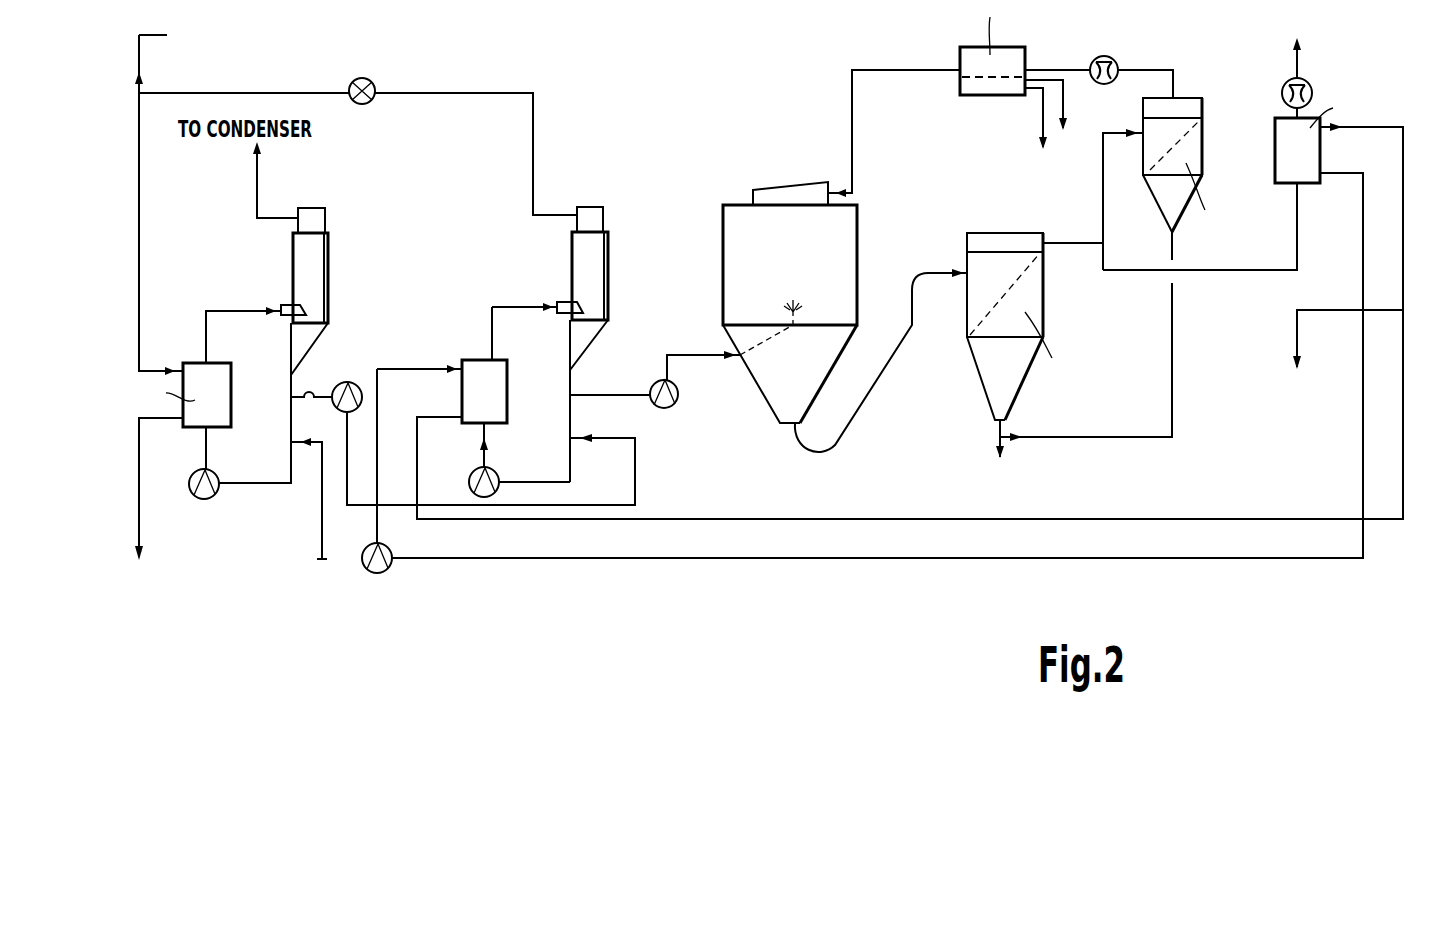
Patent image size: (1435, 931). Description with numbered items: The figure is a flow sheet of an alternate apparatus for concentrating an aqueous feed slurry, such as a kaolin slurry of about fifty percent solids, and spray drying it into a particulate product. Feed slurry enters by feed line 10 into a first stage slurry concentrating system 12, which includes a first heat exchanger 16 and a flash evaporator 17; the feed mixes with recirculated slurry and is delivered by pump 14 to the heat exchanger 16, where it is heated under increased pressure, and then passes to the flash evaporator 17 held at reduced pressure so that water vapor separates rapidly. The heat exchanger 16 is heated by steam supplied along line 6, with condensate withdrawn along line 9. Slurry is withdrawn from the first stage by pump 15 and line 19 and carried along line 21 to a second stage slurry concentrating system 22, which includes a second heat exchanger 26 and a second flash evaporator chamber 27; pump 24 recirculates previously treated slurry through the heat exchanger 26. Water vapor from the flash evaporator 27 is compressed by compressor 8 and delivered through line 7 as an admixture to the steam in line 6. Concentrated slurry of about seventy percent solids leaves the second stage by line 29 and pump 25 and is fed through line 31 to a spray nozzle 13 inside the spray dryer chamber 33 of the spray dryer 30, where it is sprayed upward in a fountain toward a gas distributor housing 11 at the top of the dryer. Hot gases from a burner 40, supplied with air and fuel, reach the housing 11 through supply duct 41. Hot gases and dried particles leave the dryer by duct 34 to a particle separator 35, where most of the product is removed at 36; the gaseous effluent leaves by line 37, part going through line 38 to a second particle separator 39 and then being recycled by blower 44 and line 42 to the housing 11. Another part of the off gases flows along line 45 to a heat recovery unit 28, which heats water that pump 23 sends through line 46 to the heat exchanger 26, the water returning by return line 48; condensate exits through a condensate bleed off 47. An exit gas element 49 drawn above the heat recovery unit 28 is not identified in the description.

The steam line 6 is at (139, 157).
The line 7 is at (483, 93).
The compressor 8 is at (363, 78).
The condensate line 9 is at (139, 512).
The feed line 10 is at (322, 533).
The gas distributor housing 11 is at (800, 188).
The first stage slurry concentrating system 12 is at (265, 343).
The spray nozzle 13 is at (802, 312).
The pump 14 is at (192, 491).
The pump 15 is at (340, 386).
The first heat exchanger 16 is at (231, 357).
The flash evaporator 17 is at (330, 236).
The line 19 is at (311, 411).
The line 21 is at (635, 468).
The second stage slurry concentrating system 22 is at (542, 338).
The pump 23 is at (392, 548).
The pump 24 is at (478, 473).
The pump 25 is at (655, 406).
The second heat exchanger 26 is at (508, 363).
The second flash evaporator chamber 27 is at (608, 232).
The heat recovery unit 28 is at (1270, 172).
The line 29 is at (648, 392).
The spray dryer 30 is at (824, 283).
The line 31 is at (700, 362).
The spray dryer chamber 33 is at (857, 283).
The duct 34 is at (890, 358).
The particle separator 35 is at (1025, 232).
The product outlet 36 is at (1000, 440).
The line 37 is at (1073, 245).
The line 38 is at (1103, 187).
The second particle separator 39 is at (1203, 125).
The burner 40 is at (960, 53).
The supply duct 41 is at (852, 112).
The line 42 is at (1173, 70).
The blower 44 is at (1110, 55).
The line 45 is at (1123, 272).
The line 46 is at (722, 559).
The condensate bleed off 47 is at (1293, 343).
The return line 48 is at (792, 519).
The exit gas fan 49 is at (1305, 65).